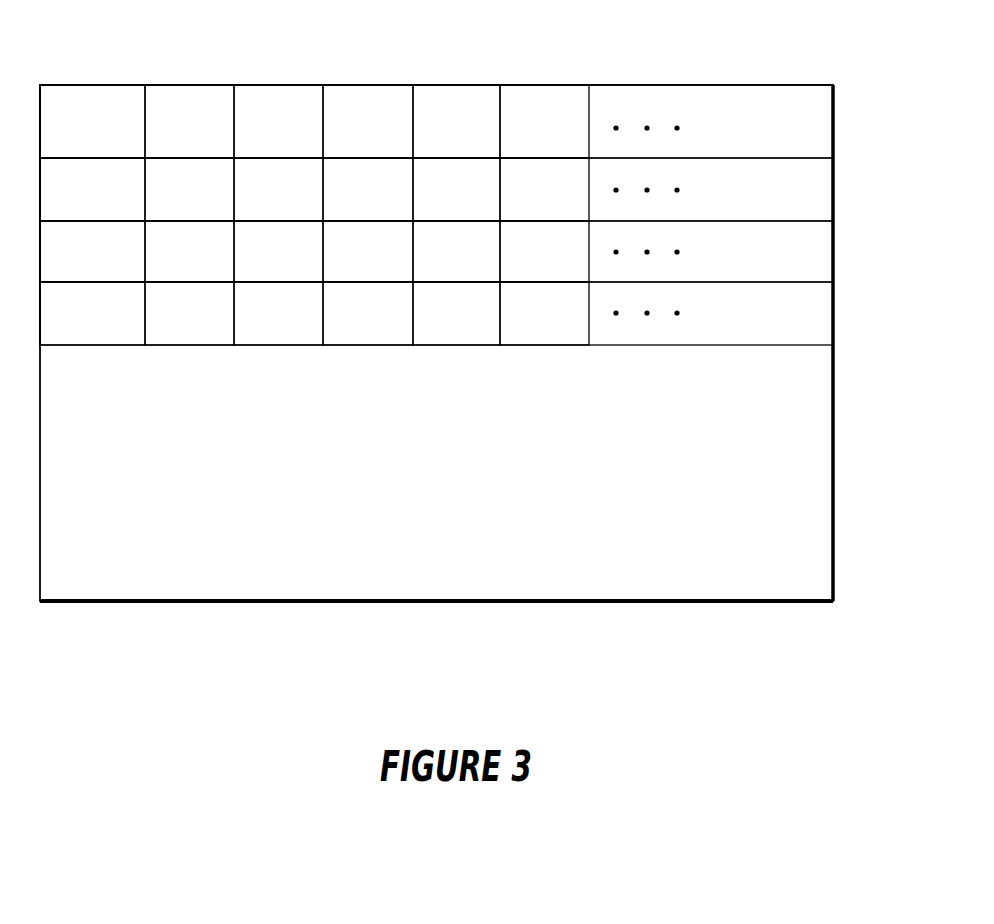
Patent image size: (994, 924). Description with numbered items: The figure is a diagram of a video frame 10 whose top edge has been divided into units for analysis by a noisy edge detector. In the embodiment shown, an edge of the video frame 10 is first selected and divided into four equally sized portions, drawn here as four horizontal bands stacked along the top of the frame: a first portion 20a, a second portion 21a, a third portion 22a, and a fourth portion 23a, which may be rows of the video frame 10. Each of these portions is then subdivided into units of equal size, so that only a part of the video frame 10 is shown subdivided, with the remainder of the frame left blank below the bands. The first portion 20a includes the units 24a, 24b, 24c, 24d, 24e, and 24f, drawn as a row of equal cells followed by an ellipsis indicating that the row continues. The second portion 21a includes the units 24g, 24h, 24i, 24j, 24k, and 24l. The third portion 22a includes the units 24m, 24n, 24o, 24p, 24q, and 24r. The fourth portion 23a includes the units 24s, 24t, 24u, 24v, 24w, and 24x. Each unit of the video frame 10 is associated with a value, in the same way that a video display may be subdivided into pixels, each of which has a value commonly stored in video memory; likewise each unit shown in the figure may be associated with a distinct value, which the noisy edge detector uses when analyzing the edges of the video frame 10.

The video frame 10 is at (722, 83).
The portion 20a is at (837, 122).
The portion 21a is at (837, 188).
The portion 22a is at (837, 250).
The portion 23a is at (837, 313).
The unit 24a is at (92, 121).
The unit 24b is at (189, 121).
The unit 24c is at (278, 121).
The unit 24d is at (368, 121).
The unit 24e is at (456, 121).
The unit 24f is at (544, 121).
The unit 24g is at (92, 189).
The unit 24h is at (189, 189).
The unit 24i is at (278, 189).
The unit 24j is at (368, 189).
The unit 24k is at (456, 189).
The unit 24l is at (544, 189).
The unit 24m is at (92, 251).
The unit 24n is at (189, 251).
The unit 24o is at (278, 251).
The unit 24p is at (368, 251).
The unit 24q is at (456, 251).
The unit 24r is at (544, 251).
The unit 24s is at (92, 313).
The unit 24t is at (189, 313).
The unit 24u is at (278, 313).
The unit 24v is at (368, 313).
The unit 24w is at (456, 313).
The unit 24x is at (544, 313).